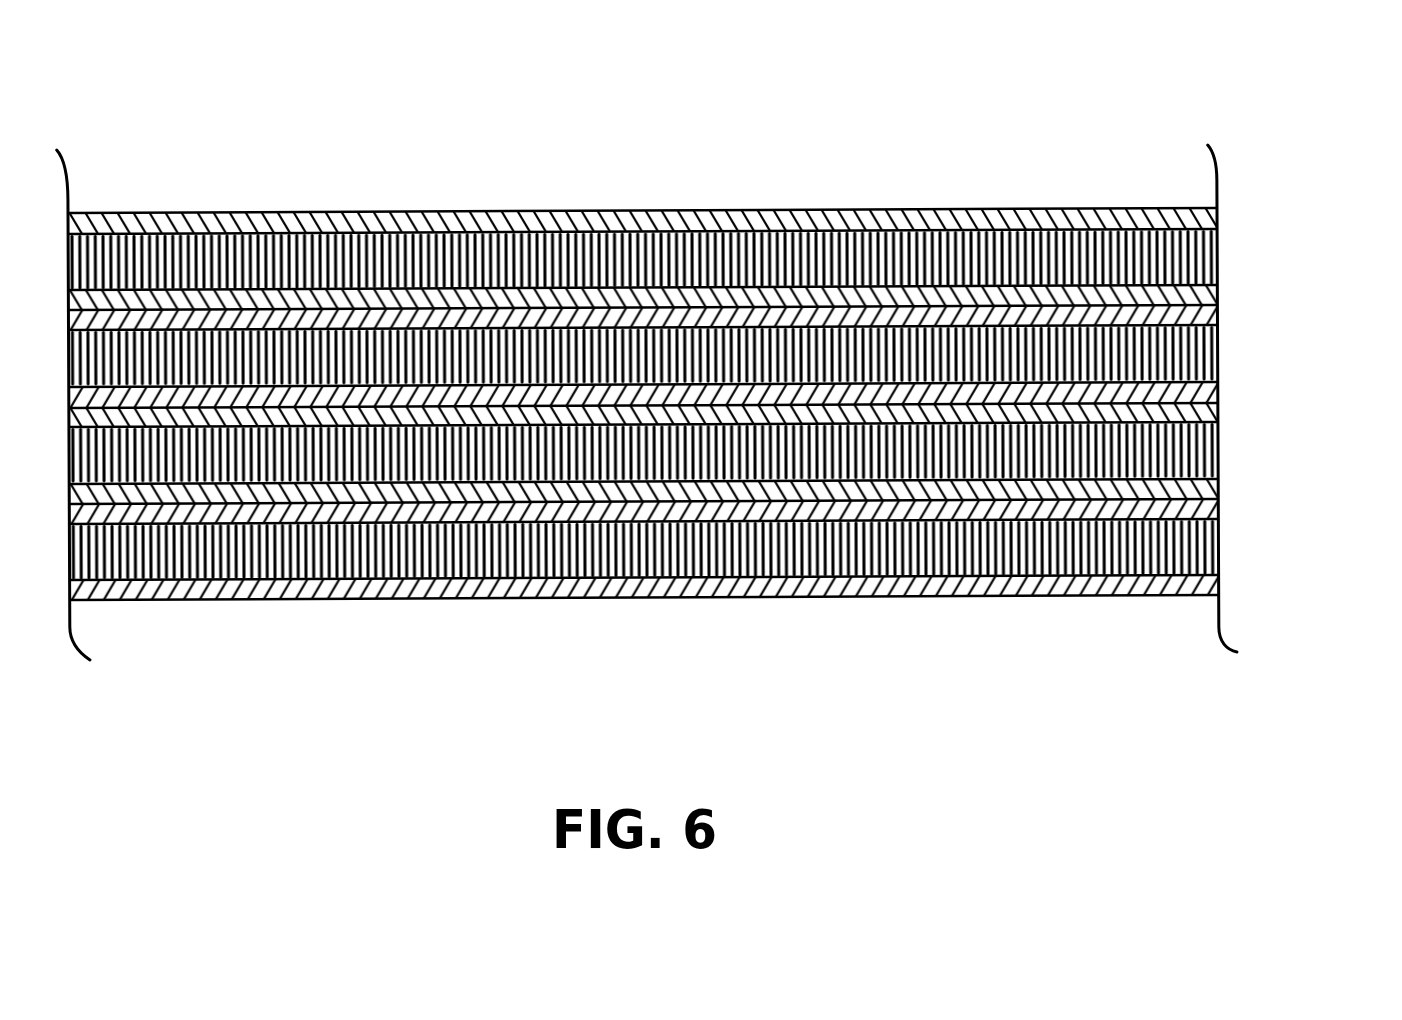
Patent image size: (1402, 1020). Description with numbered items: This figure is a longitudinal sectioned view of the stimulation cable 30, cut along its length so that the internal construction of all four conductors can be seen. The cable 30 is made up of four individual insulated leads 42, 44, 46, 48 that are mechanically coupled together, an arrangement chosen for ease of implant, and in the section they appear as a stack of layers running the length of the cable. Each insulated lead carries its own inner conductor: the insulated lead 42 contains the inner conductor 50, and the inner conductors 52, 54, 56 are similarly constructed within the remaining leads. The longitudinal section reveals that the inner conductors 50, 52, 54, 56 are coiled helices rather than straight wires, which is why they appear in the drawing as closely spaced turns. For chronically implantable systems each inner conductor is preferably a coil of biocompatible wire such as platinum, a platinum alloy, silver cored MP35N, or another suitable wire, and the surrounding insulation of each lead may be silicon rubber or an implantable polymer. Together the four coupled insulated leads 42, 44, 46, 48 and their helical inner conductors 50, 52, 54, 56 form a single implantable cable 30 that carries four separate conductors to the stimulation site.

The cable 30 is at (1075, 104).
The insulated lead 42 is at (838, 220).
The insulated lead 44 is at (717, 262).
The insulated lead 46 is at (718, 538).
The insulated lead 48 is at (1012, 578).
The inner conductor 50 is at (283, 258).
The inner conductor 52 is at (450, 350).
The inner conductor 54 is at (683, 450).
The inner conductor 56 is at (828, 532).